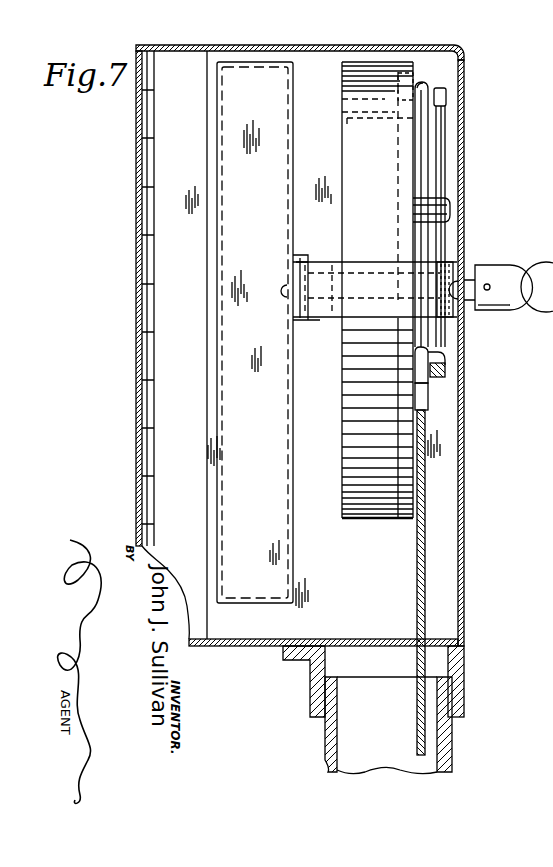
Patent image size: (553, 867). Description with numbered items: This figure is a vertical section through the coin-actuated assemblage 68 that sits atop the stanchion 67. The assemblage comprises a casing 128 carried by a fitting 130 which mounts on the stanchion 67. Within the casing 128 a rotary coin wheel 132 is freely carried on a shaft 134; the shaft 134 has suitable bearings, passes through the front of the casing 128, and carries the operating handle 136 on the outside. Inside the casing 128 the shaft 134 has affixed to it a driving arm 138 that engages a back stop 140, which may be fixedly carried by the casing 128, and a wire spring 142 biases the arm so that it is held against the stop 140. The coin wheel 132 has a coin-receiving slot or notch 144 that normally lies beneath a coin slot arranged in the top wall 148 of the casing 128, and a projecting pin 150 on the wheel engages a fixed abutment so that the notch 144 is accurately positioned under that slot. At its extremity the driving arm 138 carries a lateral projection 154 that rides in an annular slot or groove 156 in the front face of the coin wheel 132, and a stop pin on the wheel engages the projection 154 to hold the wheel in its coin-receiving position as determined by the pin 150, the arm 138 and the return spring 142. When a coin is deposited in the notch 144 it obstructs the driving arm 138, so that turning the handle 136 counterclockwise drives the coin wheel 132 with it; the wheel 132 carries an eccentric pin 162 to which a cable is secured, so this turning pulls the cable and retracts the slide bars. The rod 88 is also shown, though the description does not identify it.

The stanchion 67 is at (453, 755).
The coin-actuated assemblage 68 is at (552, 58).
The control rod 88 is at (426, 594).
The casing 128 is at (474, 515).
The fitting 130 is at (463, 685).
The rotary coin wheel 132 is at (378, 520).
The shaft 134 is at (390, 263).
The operating handle 136 is at (512, 272).
The driving arm 138 is at (428, 155).
The back stop 140 is at (450, 212).
The wire spring 142 is at (443, 126).
The coin-receiving slot 144 is at (381, 124).
The top wall 148 is at (303, 45).
The projecting pin 150 is at (331, 258).
The lateral projection 154 is at (420, 86).
The annular slot 156 is at (396, 195).
The eccentric pin 162 is at (442, 376).